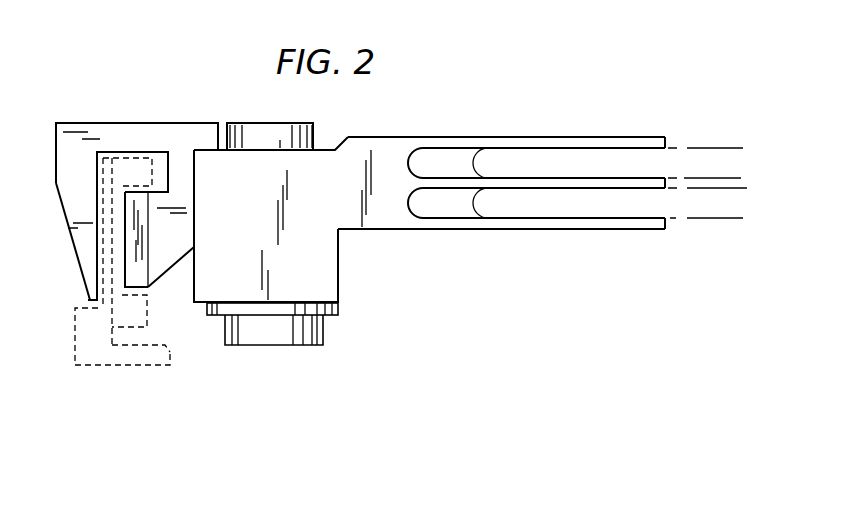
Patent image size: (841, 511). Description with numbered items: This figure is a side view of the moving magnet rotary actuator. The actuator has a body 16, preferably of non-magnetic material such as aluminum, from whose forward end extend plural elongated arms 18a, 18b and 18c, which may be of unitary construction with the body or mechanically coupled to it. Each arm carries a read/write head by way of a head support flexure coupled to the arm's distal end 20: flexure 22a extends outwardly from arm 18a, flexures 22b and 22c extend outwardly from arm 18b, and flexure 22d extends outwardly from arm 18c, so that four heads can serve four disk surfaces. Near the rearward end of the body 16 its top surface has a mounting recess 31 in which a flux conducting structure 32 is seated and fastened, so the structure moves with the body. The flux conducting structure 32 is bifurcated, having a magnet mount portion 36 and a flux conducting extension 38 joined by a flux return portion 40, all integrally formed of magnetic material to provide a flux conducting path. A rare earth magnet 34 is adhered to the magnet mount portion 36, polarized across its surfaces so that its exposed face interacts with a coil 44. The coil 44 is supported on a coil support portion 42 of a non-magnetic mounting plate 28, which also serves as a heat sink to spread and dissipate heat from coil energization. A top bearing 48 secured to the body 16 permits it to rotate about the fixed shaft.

The body 16 is at (320, 162).
The arm 18a is at (556, 133).
The arm 18b is at (616, 176).
The arm 18c is at (594, 216).
The distal end 20 is at (666, 141).
The flexure 22a is at (740, 148).
The flexure 22b is at (722, 180).
The flexure 22c is at (690, 189).
The flexure 22d is at (733, 220).
The mounting plate 28 is at (75, 358).
The mounting recess 31 is at (206, 151).
The flux conducting structure 32 is at (145, 121).
The magnet 34 is at (148, 218).
The magnet mount portion 36 is at (172, 277).
The flux conducting extension 38 is at (76, 251).
The flux return portion 40 is at (107, 111).
The coil support portion 42 is at (98, 205).
The coil 44 is at (134, 335).
The top bearing 48 is at (246, 122).